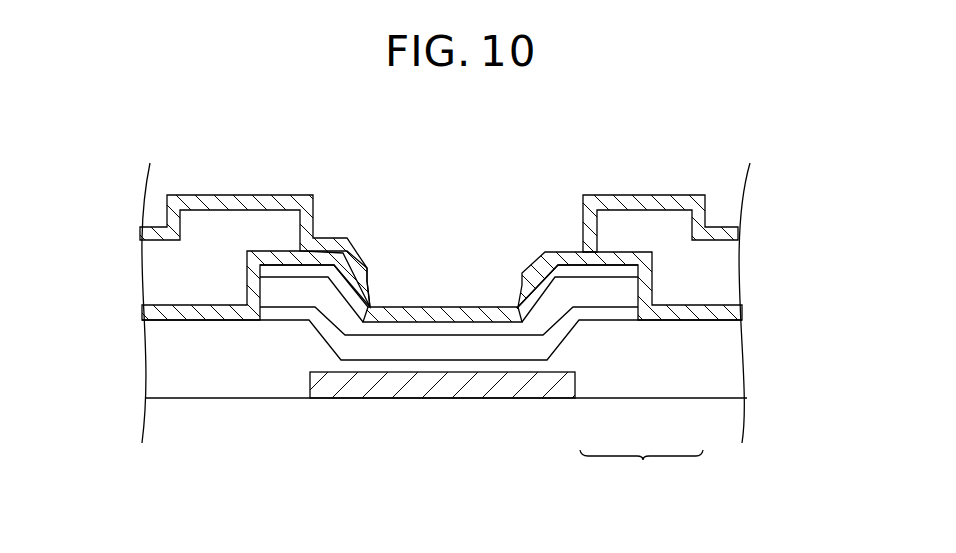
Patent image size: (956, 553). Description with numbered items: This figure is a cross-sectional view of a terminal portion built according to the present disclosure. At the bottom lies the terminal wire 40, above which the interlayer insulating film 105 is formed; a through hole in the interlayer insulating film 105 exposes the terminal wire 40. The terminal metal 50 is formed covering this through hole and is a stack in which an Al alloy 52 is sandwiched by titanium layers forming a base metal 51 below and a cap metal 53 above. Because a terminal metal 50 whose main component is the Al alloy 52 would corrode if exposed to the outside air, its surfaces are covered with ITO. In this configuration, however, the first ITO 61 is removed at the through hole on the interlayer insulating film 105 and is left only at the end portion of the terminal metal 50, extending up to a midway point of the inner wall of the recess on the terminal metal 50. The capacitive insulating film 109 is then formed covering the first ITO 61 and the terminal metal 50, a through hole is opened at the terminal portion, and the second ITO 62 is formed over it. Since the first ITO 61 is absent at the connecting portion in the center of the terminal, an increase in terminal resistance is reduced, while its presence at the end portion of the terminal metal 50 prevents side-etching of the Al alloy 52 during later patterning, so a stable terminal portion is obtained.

The terminal wire 40 is at (438, 398).
The terminal metal 50 is at (641, 473).
The base metal 51 is at (568, 335).
The Al alloy 52 is at (589, 297).
The cap metal 53 is at (608, 273).
The first ITO 61 is at (323, 253).
The second ITO 62 is at (431, 304).
The interlayer insulating film 105 is at (172, 360).
The capacitive insulating film 109 is at (182, 268).